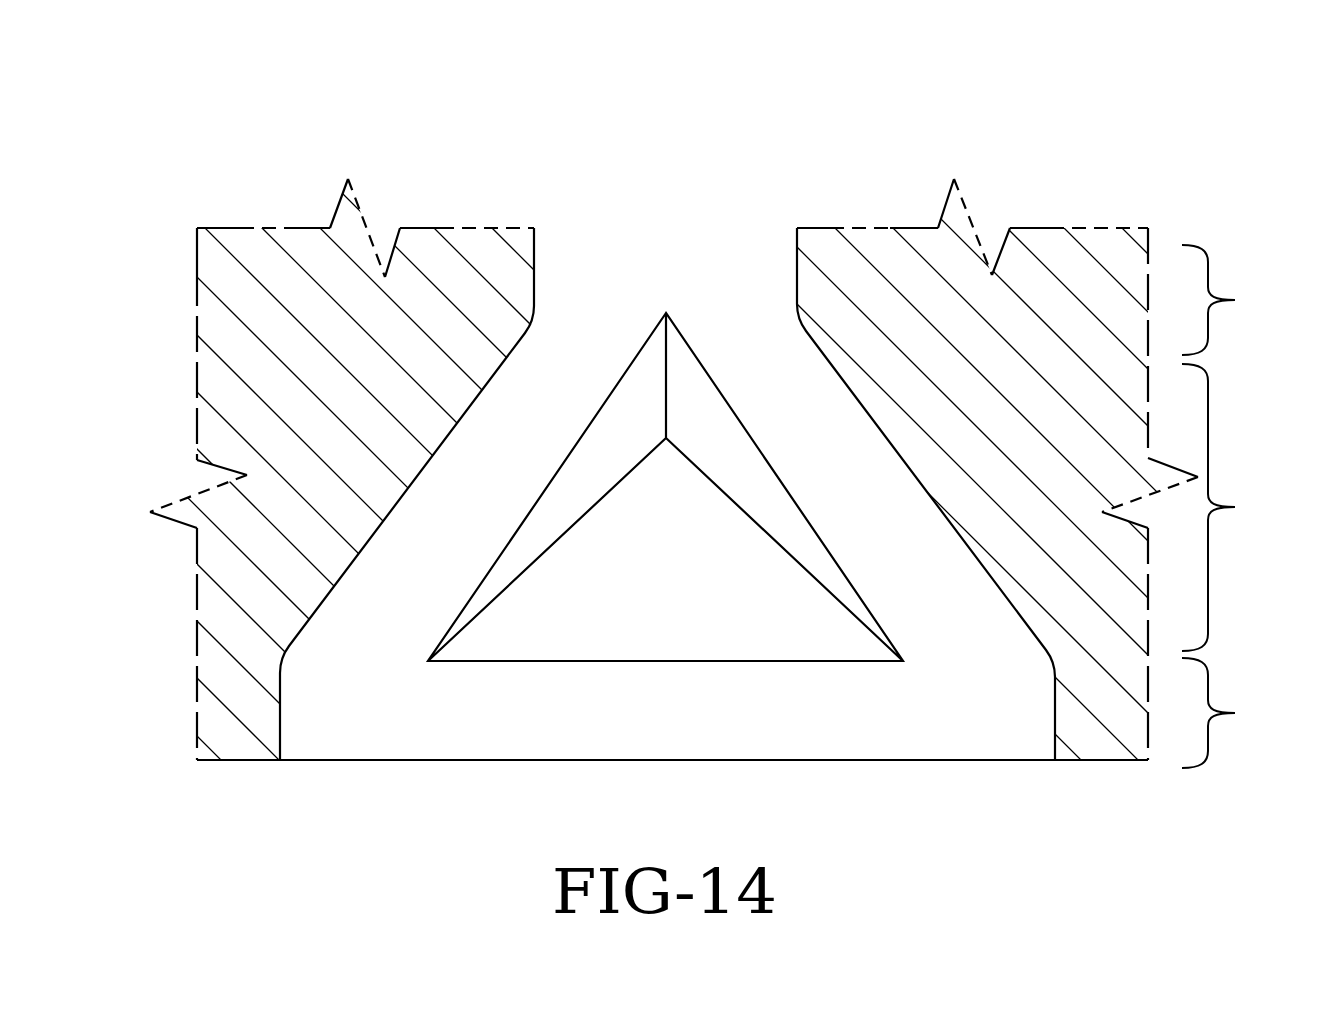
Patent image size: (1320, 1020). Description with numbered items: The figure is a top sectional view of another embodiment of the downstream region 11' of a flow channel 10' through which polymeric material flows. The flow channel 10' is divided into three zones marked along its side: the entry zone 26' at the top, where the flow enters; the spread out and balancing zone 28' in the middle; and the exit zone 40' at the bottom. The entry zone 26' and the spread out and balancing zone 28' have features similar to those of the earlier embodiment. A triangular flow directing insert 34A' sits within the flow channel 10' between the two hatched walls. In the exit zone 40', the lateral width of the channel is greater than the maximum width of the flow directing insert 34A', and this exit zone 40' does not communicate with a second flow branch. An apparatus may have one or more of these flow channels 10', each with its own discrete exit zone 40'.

The downstream region 11' is at (660, 411).
The flow channel 10' is at (667, 494).
The flow directing insert 34A' is at (665, 487).
The entry zone 26' is at (1235, 300).
The spread out and balancing zone 28' is at (1235, 507).
The exit zone 40' is at (1235, 713).